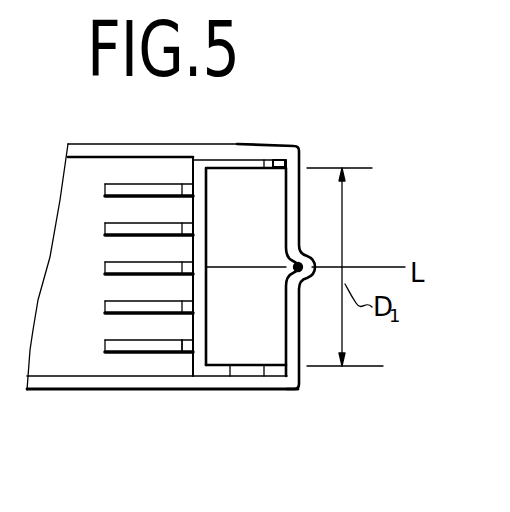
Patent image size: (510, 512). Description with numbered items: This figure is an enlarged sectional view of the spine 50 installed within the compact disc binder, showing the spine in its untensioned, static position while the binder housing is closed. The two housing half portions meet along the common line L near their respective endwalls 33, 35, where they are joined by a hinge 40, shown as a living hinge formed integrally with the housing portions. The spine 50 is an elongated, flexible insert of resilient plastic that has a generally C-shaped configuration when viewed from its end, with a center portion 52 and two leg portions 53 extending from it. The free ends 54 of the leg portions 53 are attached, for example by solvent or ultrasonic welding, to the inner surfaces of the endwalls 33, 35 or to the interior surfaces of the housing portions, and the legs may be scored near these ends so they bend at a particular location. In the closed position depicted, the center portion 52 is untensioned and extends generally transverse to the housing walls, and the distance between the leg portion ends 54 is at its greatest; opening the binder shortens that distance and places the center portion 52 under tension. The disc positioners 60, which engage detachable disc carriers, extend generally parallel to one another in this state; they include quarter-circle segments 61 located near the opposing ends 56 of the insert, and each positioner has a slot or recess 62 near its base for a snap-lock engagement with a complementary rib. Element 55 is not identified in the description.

The endwall 33 is at (293, 348).
The endwall 35 is at (290, 190).
The hinge 40 is at (317, 258).
The spine 50 is at (178, 288).
The center portion 52 is at (195, 209).
The leg portions 53 is at (220, 156).
The free ends 54 is at (277, 158).
The lower wall 55 is at (267, 377).
The opposing ends 56 is at (245, 158).
The disc positioners 60 is at (135, 188).
The quarter-circle segments 61 is at (108, 193).
The slot or recess 62 is at (187, 347).